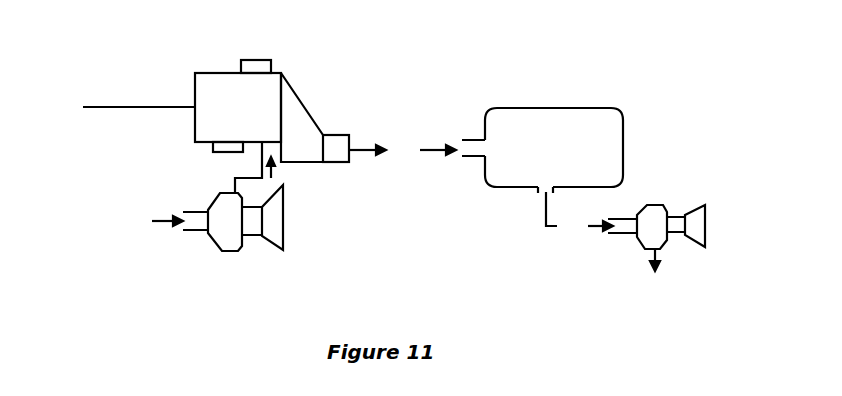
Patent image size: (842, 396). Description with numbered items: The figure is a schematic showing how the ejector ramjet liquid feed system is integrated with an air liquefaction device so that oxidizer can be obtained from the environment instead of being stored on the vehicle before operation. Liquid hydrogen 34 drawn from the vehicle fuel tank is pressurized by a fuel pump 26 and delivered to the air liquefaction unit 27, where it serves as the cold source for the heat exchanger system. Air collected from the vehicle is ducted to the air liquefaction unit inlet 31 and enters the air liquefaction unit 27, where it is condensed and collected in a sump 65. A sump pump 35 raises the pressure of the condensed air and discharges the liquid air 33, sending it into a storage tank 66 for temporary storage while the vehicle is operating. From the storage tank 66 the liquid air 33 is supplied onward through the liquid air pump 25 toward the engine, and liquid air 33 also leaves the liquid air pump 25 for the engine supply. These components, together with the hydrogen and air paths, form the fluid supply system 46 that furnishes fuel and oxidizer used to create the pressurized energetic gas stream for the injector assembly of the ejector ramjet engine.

The liquid air pump 25 is at (673, 223).
The fuel pump 26 is at (254, 228).
The air liquefaction unit 27 is at (238, 106).
The air liquefaction unit inlet 31 is at (123, 108).
The liquid air 33 is at (509, 220).
The liquid hydrogen 34 is at (165, 223).
The sump pump 35 is at (350, 135).
The fluid supply system 46 is at (585, 240).
The sump 65 is at (294, 157).
The storage tank 66 is at (542, 167).